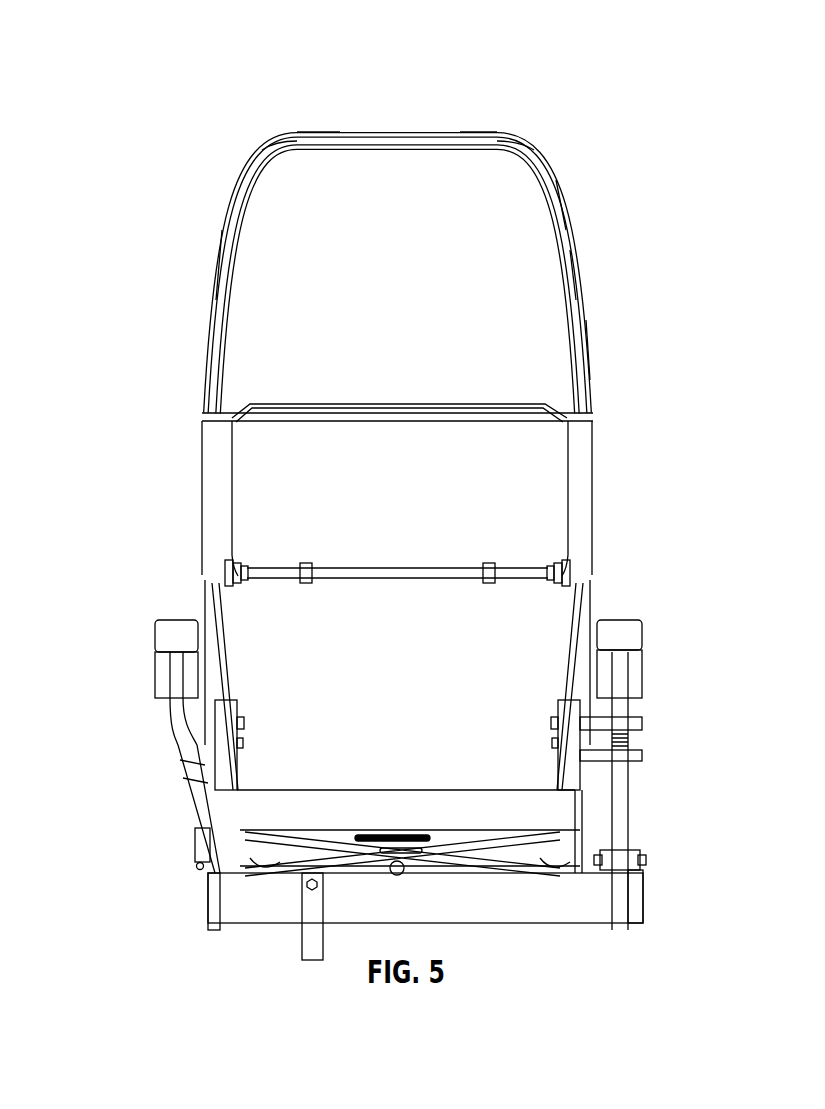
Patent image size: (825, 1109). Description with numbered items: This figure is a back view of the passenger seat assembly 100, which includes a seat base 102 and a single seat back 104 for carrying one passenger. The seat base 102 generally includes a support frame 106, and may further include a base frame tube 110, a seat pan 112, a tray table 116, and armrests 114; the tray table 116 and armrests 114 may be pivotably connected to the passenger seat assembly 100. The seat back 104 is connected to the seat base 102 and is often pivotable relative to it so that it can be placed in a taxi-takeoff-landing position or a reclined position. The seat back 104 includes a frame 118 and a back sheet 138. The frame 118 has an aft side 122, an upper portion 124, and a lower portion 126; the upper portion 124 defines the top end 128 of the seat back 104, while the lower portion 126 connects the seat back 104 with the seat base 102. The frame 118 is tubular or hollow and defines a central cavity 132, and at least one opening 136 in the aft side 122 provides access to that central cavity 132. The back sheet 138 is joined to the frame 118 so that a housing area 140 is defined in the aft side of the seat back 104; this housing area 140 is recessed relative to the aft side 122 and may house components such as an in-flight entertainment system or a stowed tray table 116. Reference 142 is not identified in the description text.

The passenger seat assembly 100 is at (458, 521).
The seat base 102 is at (232, 895).
The seat back 104 is at (233, 303).
The support frame 106 is at (200, 818).
The base frame tube 110 is at (533, 924).
The seat pan 112 is at (517, 852).
The armrest 114 is at (172, 628).
The tray table 116 is at (568, 485).
The frame 118 is at (585, 283).
The aft side 122 is at (593, 345).
The upper portion 124 is at (568, 232).
The lower portion 126 is at (217, 600).
The top end 128 is at (486, 130).
The central cavity 132 is at (232, 212).
The opening 136 is at (257, 159).
The back sheet 138 is at (487, 177).
The housing area 140 is at (370, 183).
The headrest top portion 142 is at (302, 162).